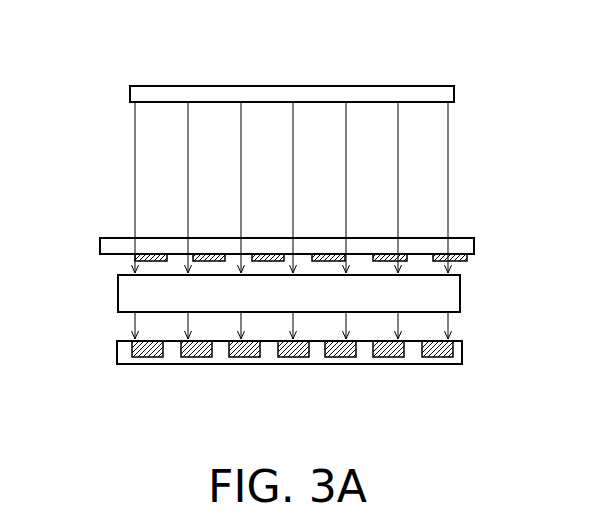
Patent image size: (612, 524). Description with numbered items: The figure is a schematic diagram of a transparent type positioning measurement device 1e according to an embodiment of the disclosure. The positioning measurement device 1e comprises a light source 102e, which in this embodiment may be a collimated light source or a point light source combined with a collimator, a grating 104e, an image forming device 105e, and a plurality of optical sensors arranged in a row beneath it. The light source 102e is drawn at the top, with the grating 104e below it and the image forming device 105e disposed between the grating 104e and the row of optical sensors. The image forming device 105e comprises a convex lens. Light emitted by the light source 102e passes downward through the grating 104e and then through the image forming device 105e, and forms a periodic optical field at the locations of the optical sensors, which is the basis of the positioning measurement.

The transparent type positioning measurement device 1e is at (580, 35).
The light source 102e is at (456, 94).
The grating 104e is at (475, 245).
The image forming device 105e is at (462, 292).